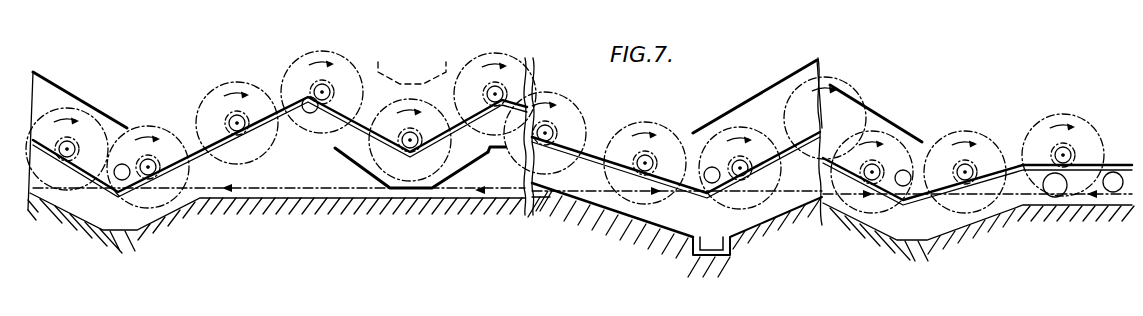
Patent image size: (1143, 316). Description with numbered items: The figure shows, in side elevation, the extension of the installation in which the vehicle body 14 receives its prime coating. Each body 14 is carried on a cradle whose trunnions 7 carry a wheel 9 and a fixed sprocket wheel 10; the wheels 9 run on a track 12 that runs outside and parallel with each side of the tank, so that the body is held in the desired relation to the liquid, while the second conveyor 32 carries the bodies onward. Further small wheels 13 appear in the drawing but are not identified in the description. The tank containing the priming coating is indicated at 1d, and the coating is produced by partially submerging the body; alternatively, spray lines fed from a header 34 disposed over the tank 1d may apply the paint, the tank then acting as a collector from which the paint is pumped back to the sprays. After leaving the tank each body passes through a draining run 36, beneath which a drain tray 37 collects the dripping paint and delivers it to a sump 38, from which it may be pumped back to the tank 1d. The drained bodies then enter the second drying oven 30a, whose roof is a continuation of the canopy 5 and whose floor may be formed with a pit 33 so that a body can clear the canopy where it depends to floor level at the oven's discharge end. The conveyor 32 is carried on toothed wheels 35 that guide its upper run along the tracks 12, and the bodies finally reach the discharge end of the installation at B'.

The canopy 5 is at (78, 97).
The trunnion 7 is at (658, 160).
The wheel 9 is at (638, 157).
The sprocket wheel 10 is at (654, 160).
The track 12 is at (200, 117).
The idler roller 13 is at (265, 125).
The vehicle body 14 is at (200, 110).
The second drying oven 30a is at (777, 98).
The second conveyor 32 is at (347, 190).
The pit 33 is at (940, 217).
The header 34 is at (400, 80).
The toothed wheels 35 is at (1112, 192).
The draining run 36 is at (553, 129).
The drain tray 37 is at (510, 147).
The sump 38 is at (710, 243).
The paint tank 1d is at (458, 163).
The discharge end B' is at (1112, 114).